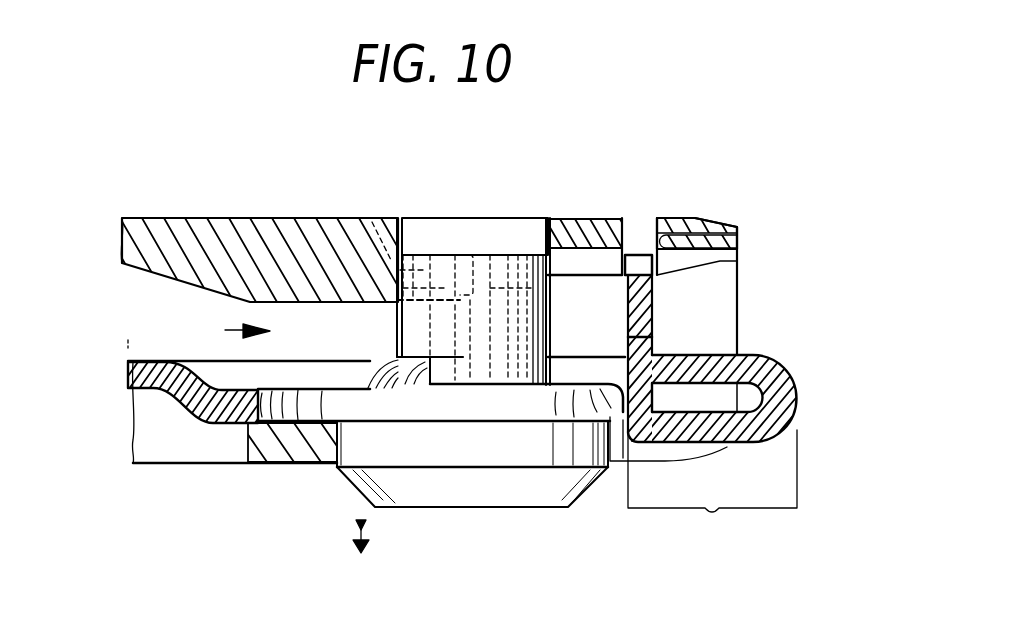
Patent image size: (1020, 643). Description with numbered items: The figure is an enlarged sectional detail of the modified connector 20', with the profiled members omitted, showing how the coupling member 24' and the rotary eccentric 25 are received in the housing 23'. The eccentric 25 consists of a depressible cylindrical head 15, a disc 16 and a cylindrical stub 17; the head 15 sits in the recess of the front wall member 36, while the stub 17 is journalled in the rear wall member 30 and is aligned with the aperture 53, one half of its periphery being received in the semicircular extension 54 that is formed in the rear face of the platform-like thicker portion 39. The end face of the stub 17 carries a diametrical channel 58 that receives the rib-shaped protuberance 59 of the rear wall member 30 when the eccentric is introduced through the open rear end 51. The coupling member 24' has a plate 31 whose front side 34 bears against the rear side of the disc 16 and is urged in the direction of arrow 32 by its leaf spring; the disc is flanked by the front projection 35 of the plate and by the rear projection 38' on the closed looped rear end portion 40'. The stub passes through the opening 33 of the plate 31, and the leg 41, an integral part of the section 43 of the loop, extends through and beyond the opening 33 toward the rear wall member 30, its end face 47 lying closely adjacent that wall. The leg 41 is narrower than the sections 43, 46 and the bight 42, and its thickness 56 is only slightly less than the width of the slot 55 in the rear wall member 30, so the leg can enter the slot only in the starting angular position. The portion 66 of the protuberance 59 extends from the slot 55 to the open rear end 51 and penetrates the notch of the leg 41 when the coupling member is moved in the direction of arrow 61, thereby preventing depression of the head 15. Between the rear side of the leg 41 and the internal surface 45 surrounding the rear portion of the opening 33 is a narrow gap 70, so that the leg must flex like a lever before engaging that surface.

The head 15 is at (490, 473).
The disc 16 is at (470, 403).
The stub 17 is at (495, 263).
The modified connector 20' is at (822, 178).
The housing 23' is at (285, 234).
The coupling member 24' is at (220, 478).
The rotary eccentric 25 is at (422, 512).
The rear wall member 30 is at (567, 232).
The plate 31 is at (150, 373).
The arrow 32 is at (353, 527).
The opening 33 is at (332, 372).
The front side of the plate 34 is at (593, 380).
The front projection 35 is at (240, 422).
The front wall member 36 is at (277, 445).
The rear projection 38' is at (668, 455).
The thicker portion 39 is at (462, 277).
The looped rear end portion 40' is at (729, 449).
The leg 41 is at (637, 305).
The bight 42 is at (797, 402).
The section 43 is at (743, 430).
The internal surface 45 is at (688, 355).
The section 46 is at (735, 360).
The end face 47 is at (638, 267).
The open rear end 51 is at (742, 228).
The aperture 53 is at (413, 230).
The semicircular extension 54 is at (368, 215).
The slot 55 is at (630, 228).
The thickness 56 is at (653, 308).
The channel 58 is at (510, 235).
The protuberance 59 is at (585, 263).
The arrow 61 is at (236, 325).
The portion of the protuberance 66 is at (690, 216).
The gap 70 is at (655, 370).